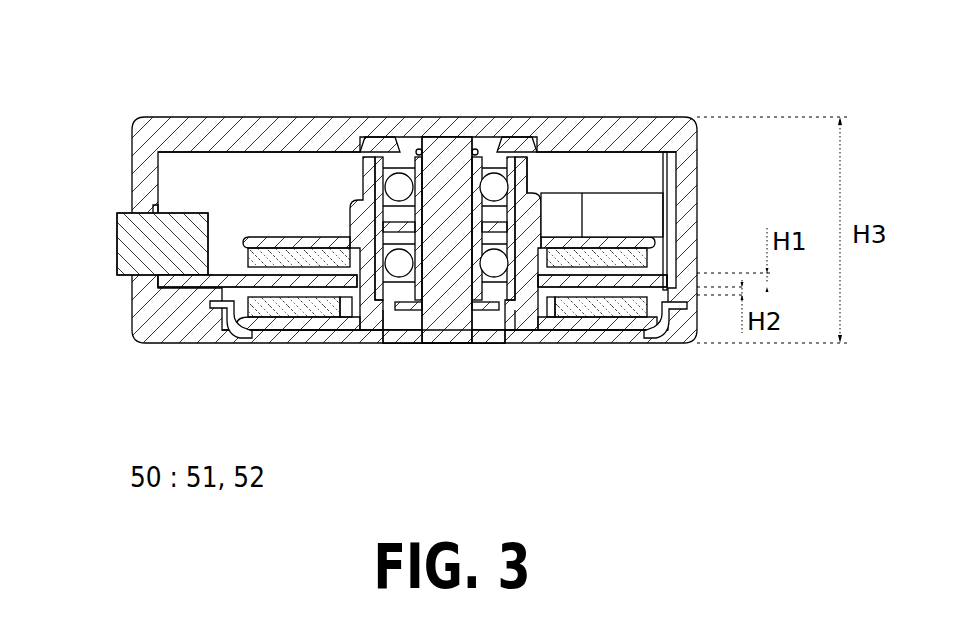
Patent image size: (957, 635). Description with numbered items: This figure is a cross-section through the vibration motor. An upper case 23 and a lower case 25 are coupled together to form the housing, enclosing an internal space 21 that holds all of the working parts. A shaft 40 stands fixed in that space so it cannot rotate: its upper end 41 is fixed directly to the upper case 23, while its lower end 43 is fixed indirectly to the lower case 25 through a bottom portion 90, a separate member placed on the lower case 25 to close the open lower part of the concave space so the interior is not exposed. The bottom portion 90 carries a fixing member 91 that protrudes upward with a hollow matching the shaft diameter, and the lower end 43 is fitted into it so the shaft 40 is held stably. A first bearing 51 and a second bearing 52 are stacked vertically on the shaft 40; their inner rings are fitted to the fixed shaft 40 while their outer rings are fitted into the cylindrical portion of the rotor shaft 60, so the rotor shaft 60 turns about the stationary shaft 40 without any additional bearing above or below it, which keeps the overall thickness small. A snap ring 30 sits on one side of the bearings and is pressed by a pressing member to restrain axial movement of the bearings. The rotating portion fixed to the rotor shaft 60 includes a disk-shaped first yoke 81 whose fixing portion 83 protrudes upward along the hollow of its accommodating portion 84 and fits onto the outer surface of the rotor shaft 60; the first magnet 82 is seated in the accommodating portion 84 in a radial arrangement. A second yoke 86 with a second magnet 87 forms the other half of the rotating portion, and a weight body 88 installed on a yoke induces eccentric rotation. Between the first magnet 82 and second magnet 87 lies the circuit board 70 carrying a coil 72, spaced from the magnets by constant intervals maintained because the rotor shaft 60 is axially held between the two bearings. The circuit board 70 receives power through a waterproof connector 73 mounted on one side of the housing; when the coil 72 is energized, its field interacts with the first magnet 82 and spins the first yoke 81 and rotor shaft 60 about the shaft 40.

The internal space 21 is at (210, 183).
The upper case 23 is at (576, 133).
The lower case 25 is at (180, 330).
The snap ring 30 is at (484, 150).
The shaft 40 is at (457, 343).
The upper end of the shaft 41 is at (446, 137).
The lower end of the shaft 43 is at (447, 335).
The first bearing 51 is at (379, 137).
The second bearing 52 is at (372, 337).
The rotor shaft 60 is at (530, 300).
The circuit board 70 is at (617, 281).
The coil 72 is at (182, 280).
The connector 73 is at (124, 232).
The first yoke 81 is at (449, 165).
The first magnet 82 is at (265, 237).
The fixing portion 83 is at (349, 190).
The accommodating portion 84 is at (291, 238).
The second yoke 86 is at (325, 320).
The second magnet 87 is at (280, 306).
The weight body 88 is at (618, 217).
The bottom portion 90 is at (250, 340).
The fixing member 91 is at (483, 317).